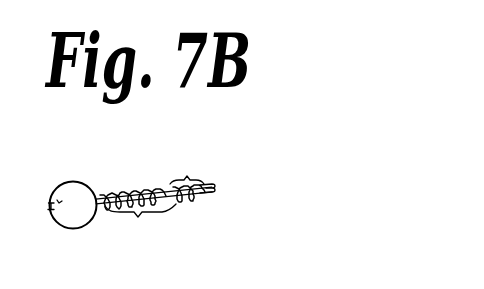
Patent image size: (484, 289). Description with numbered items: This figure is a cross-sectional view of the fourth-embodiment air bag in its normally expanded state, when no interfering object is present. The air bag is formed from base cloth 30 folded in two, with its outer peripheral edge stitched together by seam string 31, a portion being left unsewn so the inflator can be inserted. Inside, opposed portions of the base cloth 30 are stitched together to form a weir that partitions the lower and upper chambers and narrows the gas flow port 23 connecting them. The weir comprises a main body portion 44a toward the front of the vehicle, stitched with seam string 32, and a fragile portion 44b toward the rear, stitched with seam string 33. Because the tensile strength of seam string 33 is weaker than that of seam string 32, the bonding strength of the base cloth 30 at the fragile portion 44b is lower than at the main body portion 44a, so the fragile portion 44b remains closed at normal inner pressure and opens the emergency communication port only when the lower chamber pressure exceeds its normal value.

The gas flow port 23 is at (67, 219).
The base cloth 30 is at (80, 182).
The seam string 31 is at (213, 185).
The seam string 32 is at (138, 187).
The seam string 33 is at (191, 201).
The main body portion 44a is at (140, 226).
The fragile portion 44b is at (183, 175).